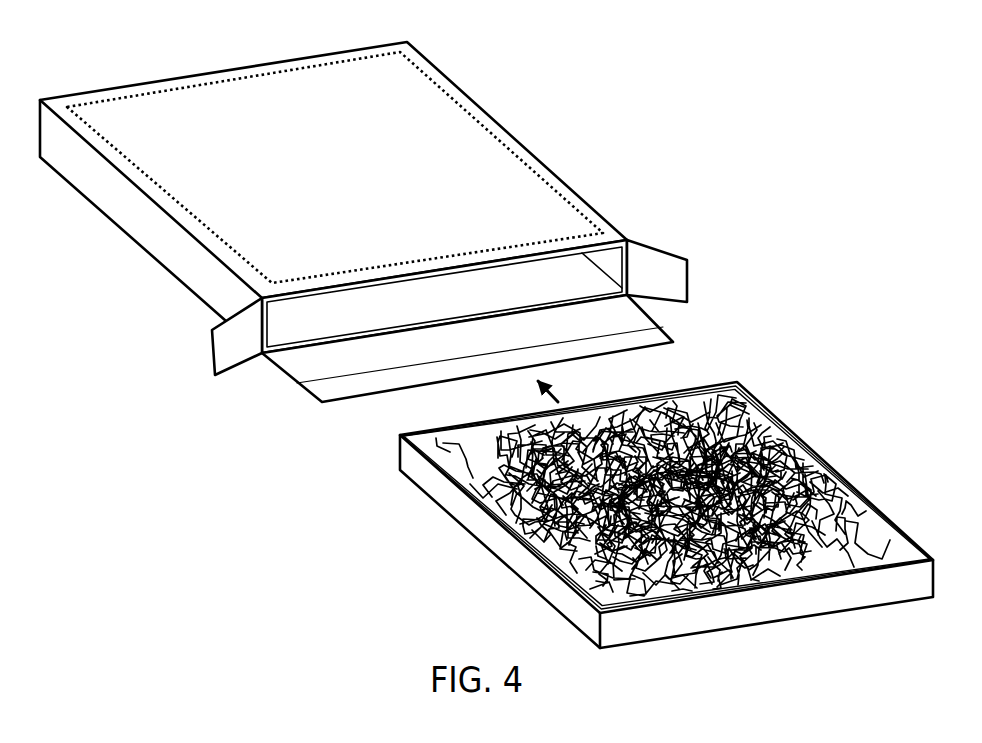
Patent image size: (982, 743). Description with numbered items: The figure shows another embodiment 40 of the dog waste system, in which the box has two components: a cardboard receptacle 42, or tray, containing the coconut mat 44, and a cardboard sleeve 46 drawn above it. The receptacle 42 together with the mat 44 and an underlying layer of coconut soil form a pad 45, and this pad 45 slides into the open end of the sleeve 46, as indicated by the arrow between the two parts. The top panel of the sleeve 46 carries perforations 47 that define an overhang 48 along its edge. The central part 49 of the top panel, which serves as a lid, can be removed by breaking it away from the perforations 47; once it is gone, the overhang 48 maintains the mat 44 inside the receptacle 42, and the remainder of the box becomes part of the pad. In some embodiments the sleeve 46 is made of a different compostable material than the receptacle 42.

The embodiment 40 is at (486, 331).
The cardboard receptacle 42 is at (770, 412).
The coconut mat 44 is at (848, 512).
The pad 45 is at (648, 490).
The cardboard sleeve 46 is at (545, 167).
The perforations 47 is at (482, 127).
The overhang 48 is at (610, 237).
The central part 49 is at (418, 97).